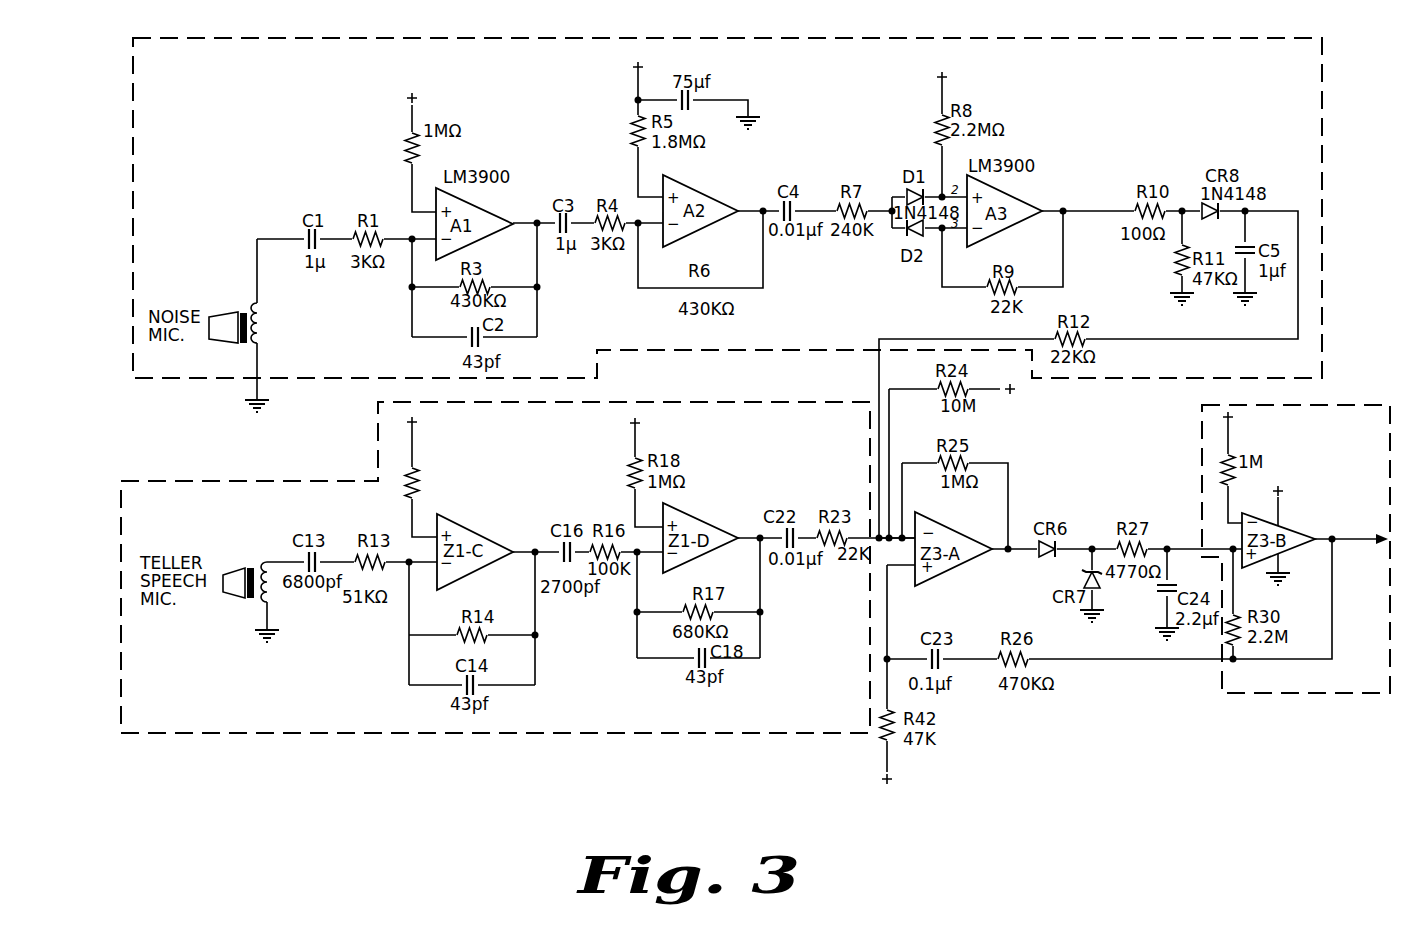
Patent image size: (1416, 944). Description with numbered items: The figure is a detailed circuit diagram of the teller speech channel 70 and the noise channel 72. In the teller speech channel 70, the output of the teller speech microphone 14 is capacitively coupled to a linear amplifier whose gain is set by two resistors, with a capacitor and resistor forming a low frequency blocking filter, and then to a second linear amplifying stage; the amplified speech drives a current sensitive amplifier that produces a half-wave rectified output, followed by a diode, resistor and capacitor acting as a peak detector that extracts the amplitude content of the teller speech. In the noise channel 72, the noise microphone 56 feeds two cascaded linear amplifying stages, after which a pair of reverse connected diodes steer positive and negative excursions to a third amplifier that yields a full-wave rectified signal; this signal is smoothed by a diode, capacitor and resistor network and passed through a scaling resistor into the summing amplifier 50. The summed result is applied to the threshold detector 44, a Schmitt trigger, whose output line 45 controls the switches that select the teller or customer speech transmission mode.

The noise channel 72 is at (124, 358).
The noise microphone 56 is at (229, 338).
The teller speech channel 70 is at (231, 736).
The teller speech microphone 14 is at (218, 597).
The operational amplifier 50 is at (1115, 472).
The threshold detector 44 is at (1309, 700).
The line 45 is at (1355, 538).